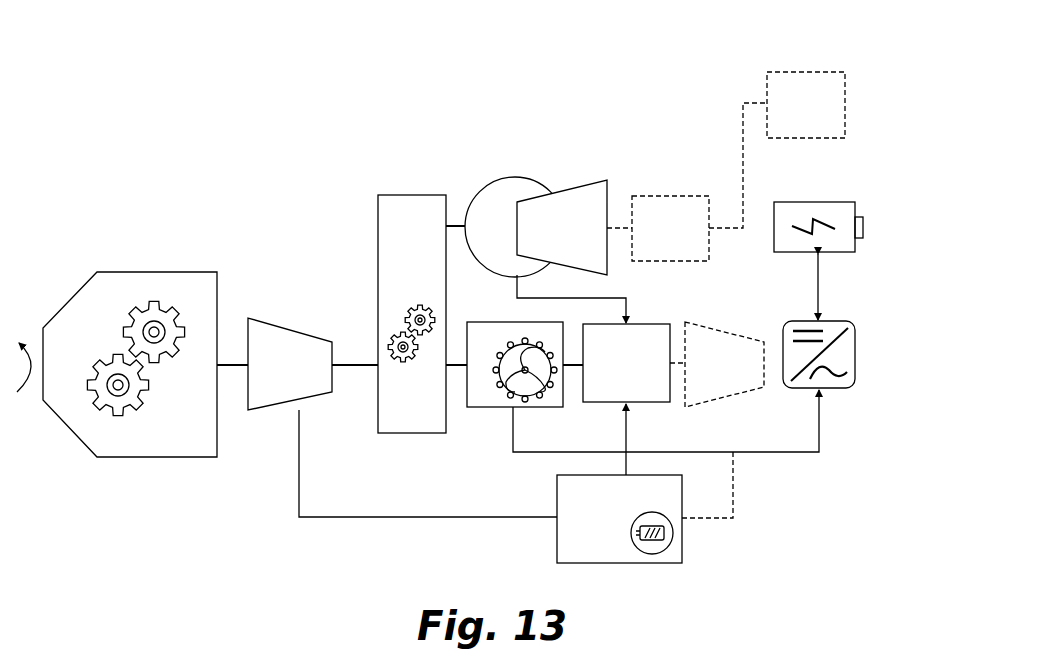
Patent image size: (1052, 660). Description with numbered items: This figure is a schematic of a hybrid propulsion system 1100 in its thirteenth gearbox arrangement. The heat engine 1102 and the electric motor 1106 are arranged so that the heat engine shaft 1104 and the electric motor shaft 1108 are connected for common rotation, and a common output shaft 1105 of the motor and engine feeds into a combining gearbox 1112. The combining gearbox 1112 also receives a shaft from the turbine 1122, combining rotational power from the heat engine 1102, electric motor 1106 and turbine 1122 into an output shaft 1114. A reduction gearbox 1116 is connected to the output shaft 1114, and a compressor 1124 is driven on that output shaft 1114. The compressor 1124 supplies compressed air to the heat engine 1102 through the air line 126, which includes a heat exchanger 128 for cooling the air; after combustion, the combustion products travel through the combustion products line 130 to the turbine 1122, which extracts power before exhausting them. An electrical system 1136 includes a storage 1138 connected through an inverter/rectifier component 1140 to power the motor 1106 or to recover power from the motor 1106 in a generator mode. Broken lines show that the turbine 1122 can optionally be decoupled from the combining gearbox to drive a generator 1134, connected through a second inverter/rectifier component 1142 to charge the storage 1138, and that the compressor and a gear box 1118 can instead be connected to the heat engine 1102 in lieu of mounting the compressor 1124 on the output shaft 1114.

The system 1100 is at (152, 105).
The reduction gearbox 1116 is at (158, 272).
The compressor 1124 is at (292, 318).
The output shaft 1114 is at (357, 364).
The combining gearbox 1112 is at (391, 195).
The turbine 1122 is at (589, 184).
The combustion products line 130 is at (516, 291).
The generator 1134 is at (694, 238).
The inverter/rectifier component 1142 is at (830, 115).
The electrical system 1136 is at (885, 151).
The storage 1138 is at (855, 207).
The inverter/rectifier component 1140 is at (862, 340).
The electric motor 1106 is at (497, 408).
The electric motor shaft 1108 is at (397, 424).
The common output shaft 1105 is at (453, 367).
The heat engine shaft 1104 is at (573, 367).
The heat engine 1102 is at (643, 403).
The gear box 1118 is at (742, 360).
The air line 126 is at (378, 518).
The heat exchanger 128 is at (557, 532).